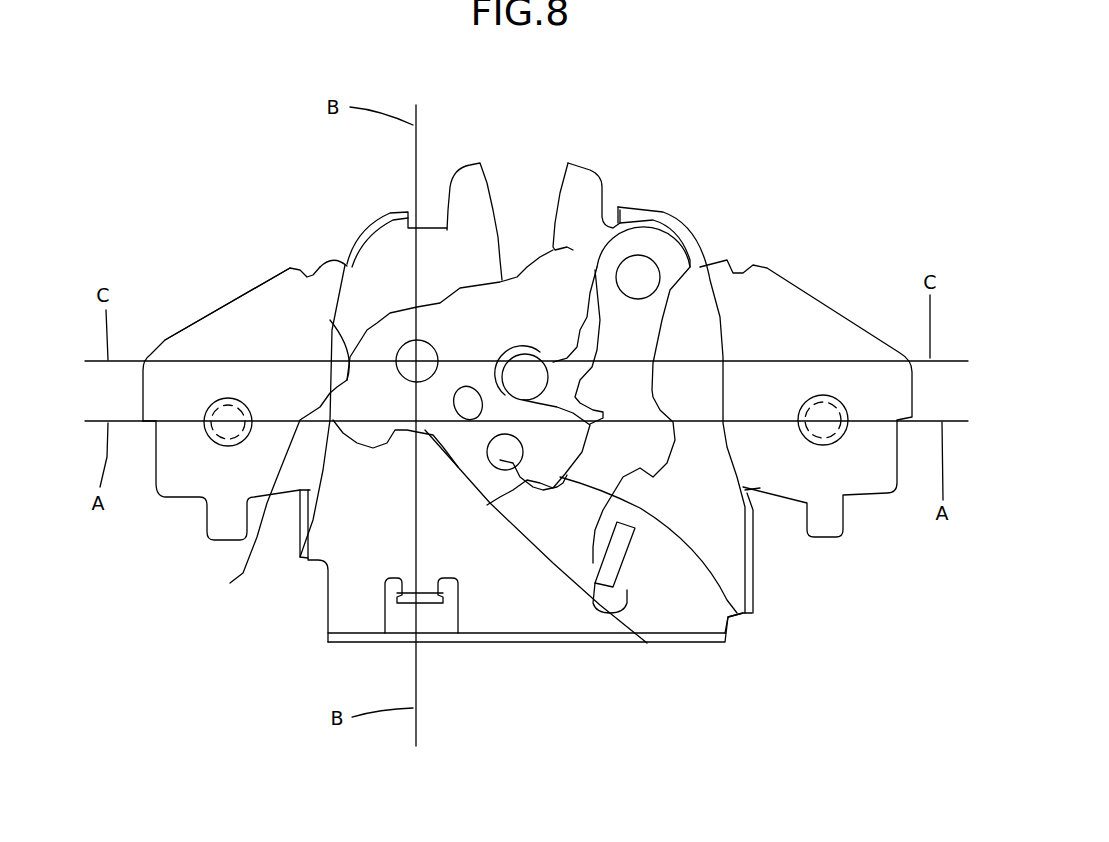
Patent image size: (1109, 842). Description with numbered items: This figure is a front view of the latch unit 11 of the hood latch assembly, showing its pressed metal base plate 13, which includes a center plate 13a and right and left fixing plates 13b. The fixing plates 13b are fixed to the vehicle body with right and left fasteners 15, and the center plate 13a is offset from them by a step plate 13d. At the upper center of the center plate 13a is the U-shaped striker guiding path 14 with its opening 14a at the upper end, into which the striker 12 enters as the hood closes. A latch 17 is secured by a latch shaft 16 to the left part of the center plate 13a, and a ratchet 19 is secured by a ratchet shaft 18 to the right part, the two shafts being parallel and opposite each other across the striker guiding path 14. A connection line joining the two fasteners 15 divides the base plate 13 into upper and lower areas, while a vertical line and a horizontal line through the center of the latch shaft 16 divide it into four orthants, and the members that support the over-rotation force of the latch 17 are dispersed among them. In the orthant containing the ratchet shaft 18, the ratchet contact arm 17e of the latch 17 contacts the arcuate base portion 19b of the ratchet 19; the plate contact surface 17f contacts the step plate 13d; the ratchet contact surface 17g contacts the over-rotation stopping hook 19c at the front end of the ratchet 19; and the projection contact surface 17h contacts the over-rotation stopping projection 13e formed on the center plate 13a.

The latch unit 11 is at (824, 198).
The striker 12 is at (533, 380).
The base plate 13 is at (833, 321).
The center plate 13a is at (720, 550).
The fixing plate 13b is at (197, 347).
The step plate 13d is at (274, 464).
The over-rotation stopping projection 13e is at (453, 507).
The striker guiding path 14 is at (525, 228).
The opening 14a is at (523, 167).
The fastener 15 is at (213, 443).
The latch shaft 16 is at (400, 347).
The latch 17 is at (465, 300).
The ratchet contact arm 17e is at (579, 273).
The plate contact surface 17f is at (328, 350).
The ratchet contact surface 17g is at (727, 613).
The projection contact surface 17h is at (495, 468).
The ratchet shaft 18 is at (700, 227).
The ratchet 19 is at (572, 560).
The base portion 19b is at (648, 272).
The over-rotation stopping hook 19c is at (533, 495).